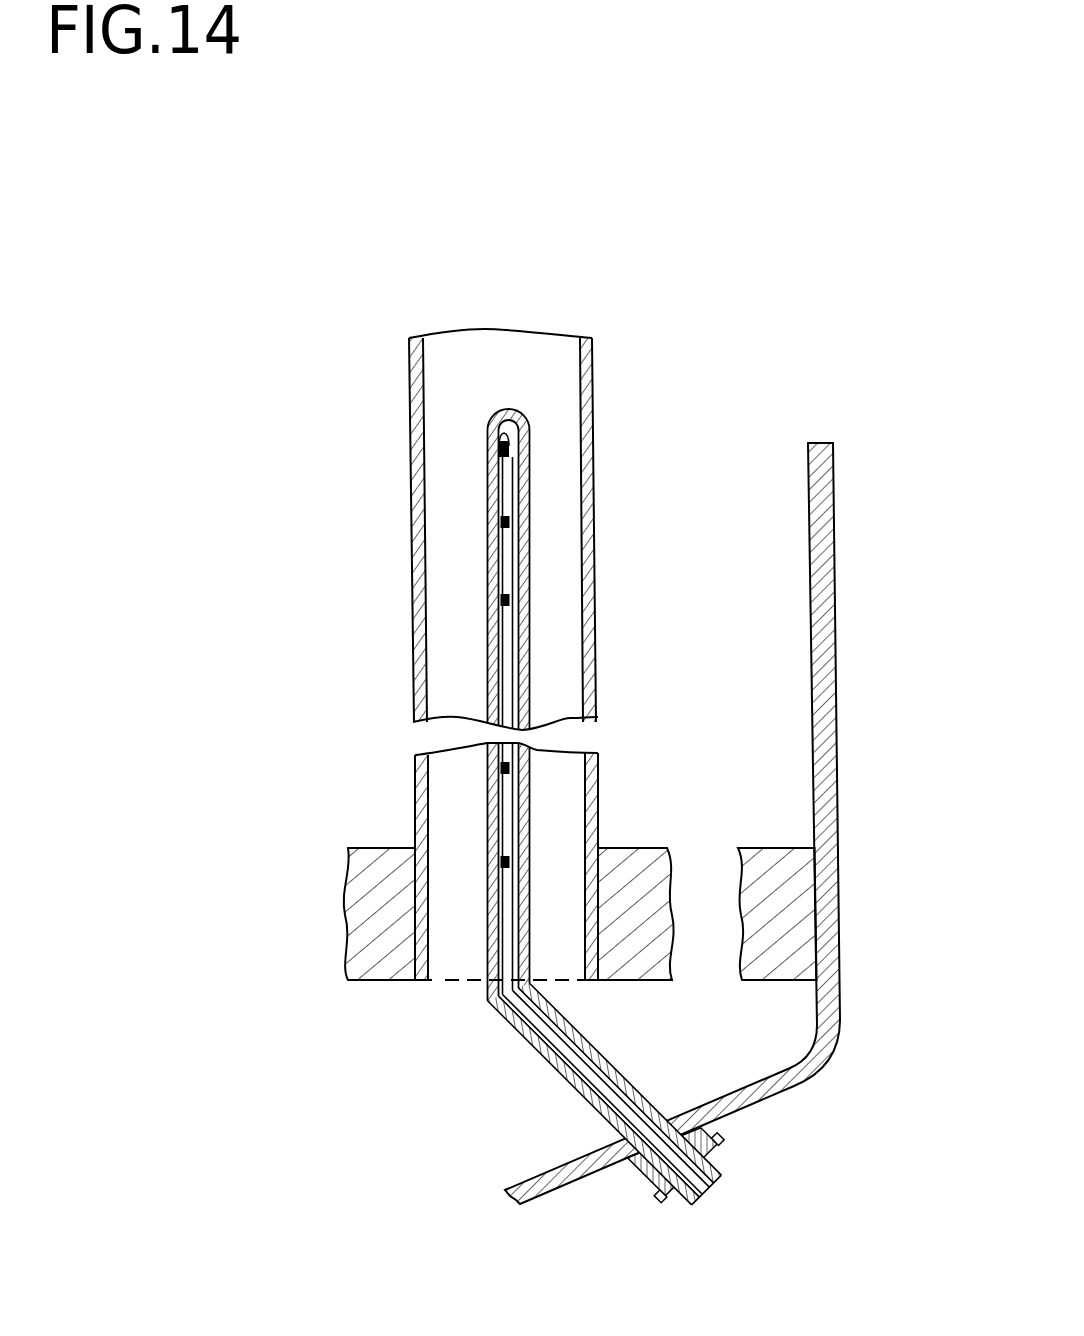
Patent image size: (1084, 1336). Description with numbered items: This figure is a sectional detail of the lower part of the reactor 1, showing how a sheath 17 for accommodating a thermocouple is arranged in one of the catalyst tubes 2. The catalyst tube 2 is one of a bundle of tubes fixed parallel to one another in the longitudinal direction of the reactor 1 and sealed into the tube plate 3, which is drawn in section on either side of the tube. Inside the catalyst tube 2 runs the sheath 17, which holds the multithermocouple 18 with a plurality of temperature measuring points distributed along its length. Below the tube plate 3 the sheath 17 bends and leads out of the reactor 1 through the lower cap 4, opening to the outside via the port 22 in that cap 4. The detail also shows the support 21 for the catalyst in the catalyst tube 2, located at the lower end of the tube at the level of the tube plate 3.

The reactor 1 is at (866, 582).
The catalyst tube 2 is at (593, 362).
The tube plate 3 is at (790, 890).
The cap 4 is at (763, 1092).
The sheath 17 is at (530, 465).
The multithermocouple 18 is at (490, 464).
The support 21 is at (450, 982).
The port 22 is at (655, 1166).